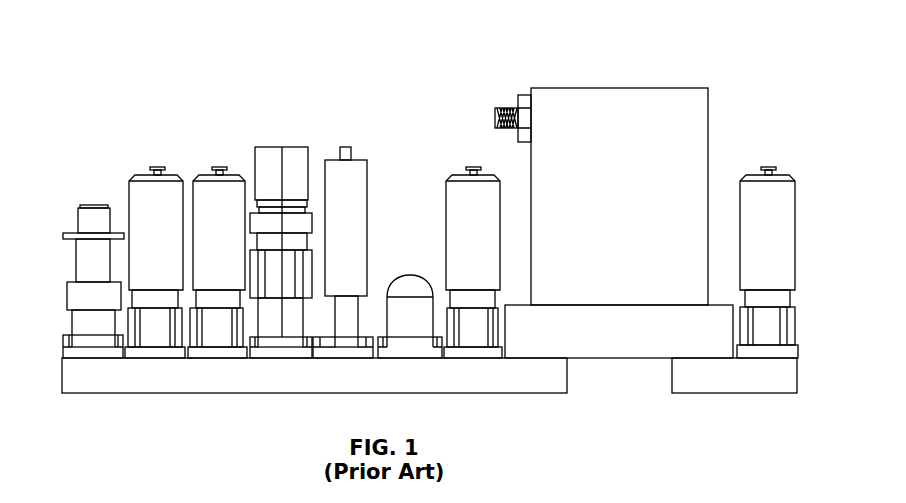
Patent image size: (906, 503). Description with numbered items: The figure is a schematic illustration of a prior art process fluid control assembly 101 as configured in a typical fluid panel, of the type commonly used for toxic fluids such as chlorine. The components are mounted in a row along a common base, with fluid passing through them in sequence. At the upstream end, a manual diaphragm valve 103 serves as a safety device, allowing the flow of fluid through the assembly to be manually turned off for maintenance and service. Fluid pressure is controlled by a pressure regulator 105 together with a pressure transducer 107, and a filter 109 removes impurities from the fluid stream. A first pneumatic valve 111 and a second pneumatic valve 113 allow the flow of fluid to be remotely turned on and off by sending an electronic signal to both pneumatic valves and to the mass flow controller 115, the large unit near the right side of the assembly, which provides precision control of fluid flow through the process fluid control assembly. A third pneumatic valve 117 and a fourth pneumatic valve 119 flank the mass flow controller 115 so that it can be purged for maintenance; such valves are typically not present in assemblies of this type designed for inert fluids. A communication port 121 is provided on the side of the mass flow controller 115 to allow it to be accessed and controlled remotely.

The process fluid control assembly 101 is at (106, 61).
The manual diaphragm valve 103 is at (78, 217).
The pressure regulator 105 is at (273, 147).
The pressure transducer 107 is at (336, 158).
The filter 109 is at (410, 274).
The first pneumatic valve 111 is at (145, 176).
The second pneumatic valve 113 is at (206, 176).
The mass flow controller 115 is at (630, 88).
The third pneumatic valve 117 is at (460, 175).
The fourth pneumatic valve 119 is at (757, 171).
The communication port 121 is at (503, 108).